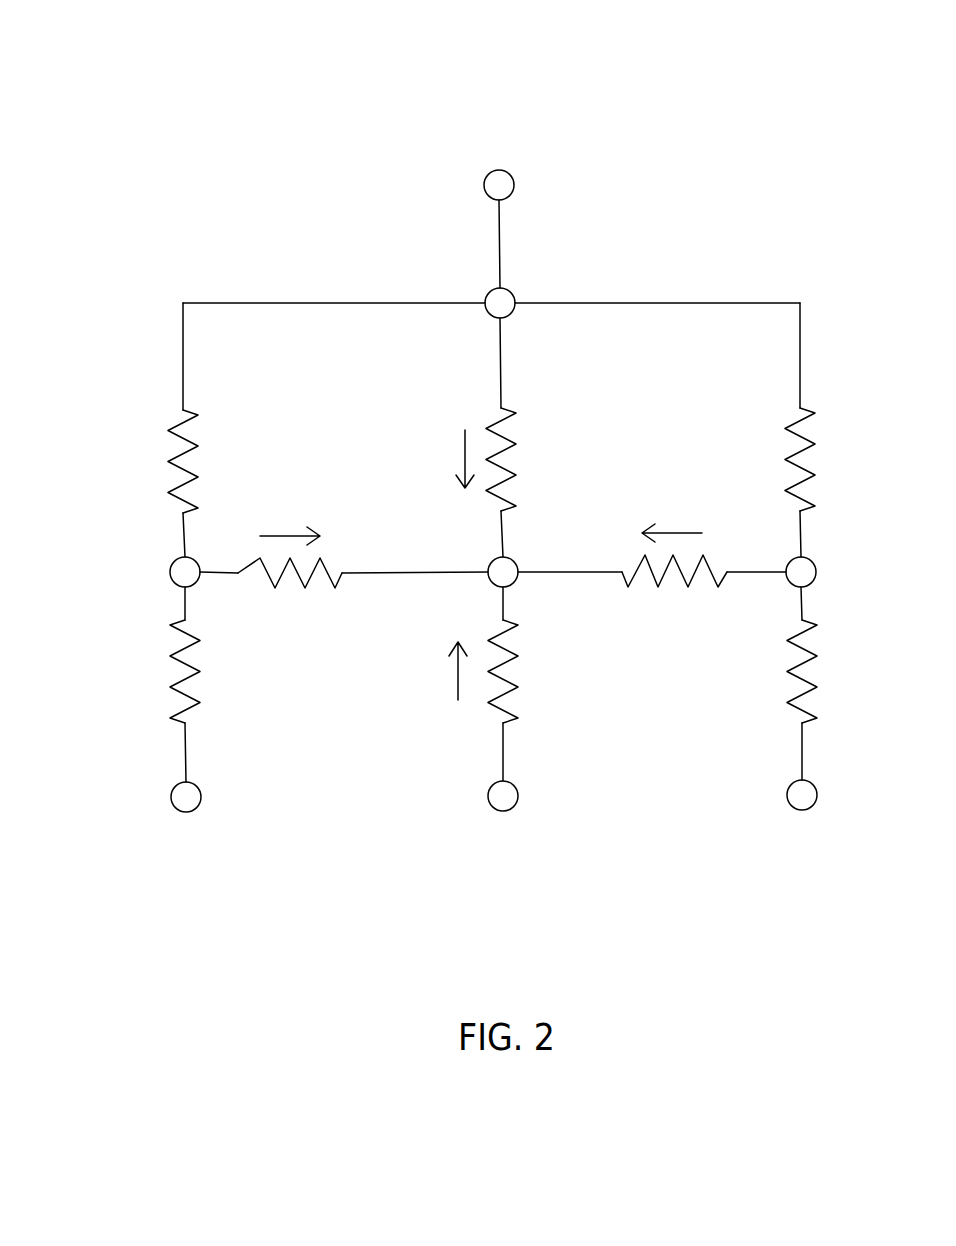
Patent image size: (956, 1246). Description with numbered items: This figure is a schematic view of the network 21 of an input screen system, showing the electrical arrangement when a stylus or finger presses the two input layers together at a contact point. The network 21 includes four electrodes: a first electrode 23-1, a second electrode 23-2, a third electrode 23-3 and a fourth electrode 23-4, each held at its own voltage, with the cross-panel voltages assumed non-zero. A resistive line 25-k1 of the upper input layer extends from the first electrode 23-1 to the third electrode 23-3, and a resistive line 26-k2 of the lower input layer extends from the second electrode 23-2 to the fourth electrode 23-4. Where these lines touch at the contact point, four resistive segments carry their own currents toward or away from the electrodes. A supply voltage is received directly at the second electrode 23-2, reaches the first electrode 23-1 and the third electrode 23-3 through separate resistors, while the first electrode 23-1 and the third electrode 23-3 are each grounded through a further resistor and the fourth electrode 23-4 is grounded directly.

The network 21 is at (748, 107).
The first electrode 23-1 is at (174, 561).
The second electrode 23-2 is at (511, 292).
The third electrode 23-3 is at (812, 561).
The fourth electrode 23-4 is at (518, 794).
The resistive line 25-k1 is at (335, 588).
The resistive line 26-k2 is at (516, 413).